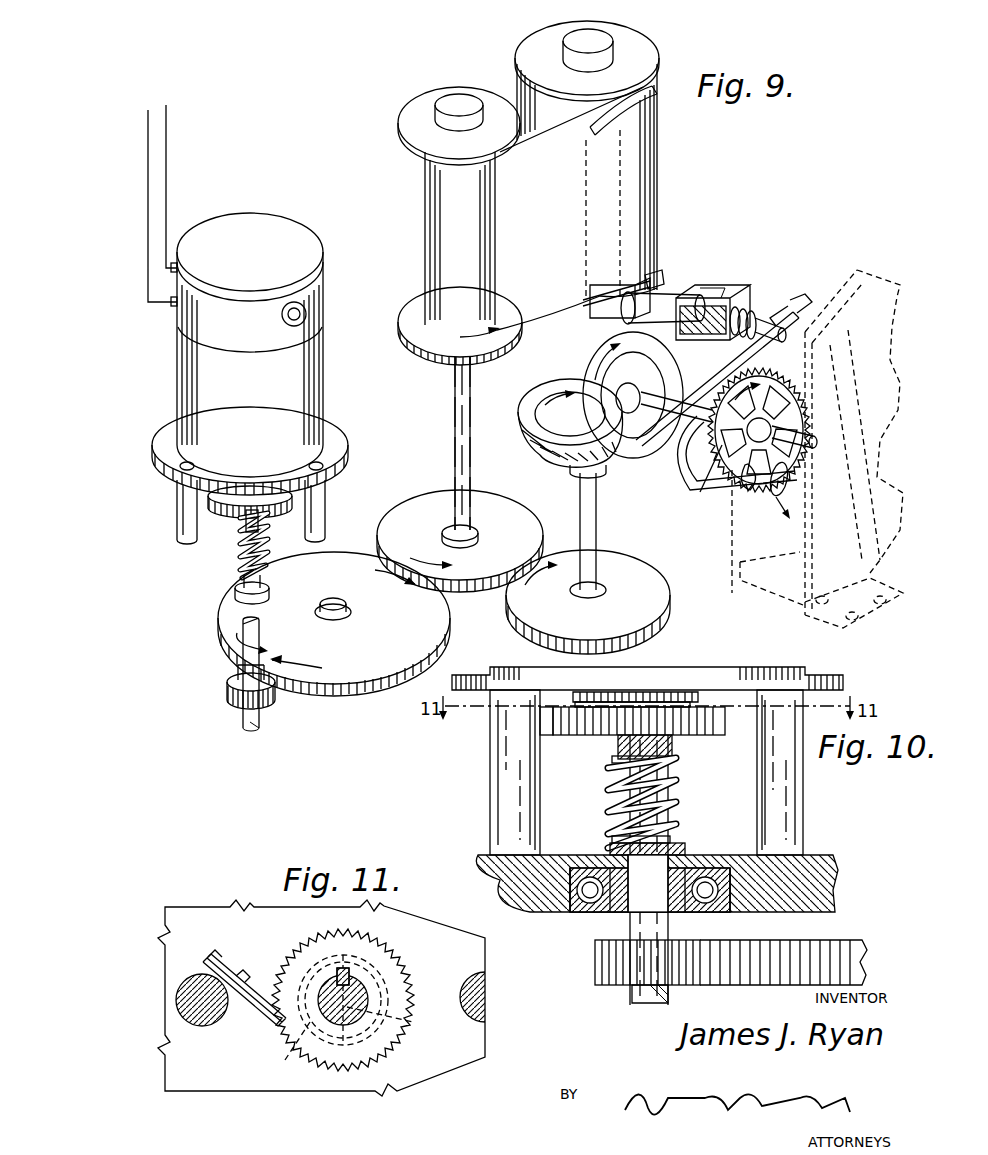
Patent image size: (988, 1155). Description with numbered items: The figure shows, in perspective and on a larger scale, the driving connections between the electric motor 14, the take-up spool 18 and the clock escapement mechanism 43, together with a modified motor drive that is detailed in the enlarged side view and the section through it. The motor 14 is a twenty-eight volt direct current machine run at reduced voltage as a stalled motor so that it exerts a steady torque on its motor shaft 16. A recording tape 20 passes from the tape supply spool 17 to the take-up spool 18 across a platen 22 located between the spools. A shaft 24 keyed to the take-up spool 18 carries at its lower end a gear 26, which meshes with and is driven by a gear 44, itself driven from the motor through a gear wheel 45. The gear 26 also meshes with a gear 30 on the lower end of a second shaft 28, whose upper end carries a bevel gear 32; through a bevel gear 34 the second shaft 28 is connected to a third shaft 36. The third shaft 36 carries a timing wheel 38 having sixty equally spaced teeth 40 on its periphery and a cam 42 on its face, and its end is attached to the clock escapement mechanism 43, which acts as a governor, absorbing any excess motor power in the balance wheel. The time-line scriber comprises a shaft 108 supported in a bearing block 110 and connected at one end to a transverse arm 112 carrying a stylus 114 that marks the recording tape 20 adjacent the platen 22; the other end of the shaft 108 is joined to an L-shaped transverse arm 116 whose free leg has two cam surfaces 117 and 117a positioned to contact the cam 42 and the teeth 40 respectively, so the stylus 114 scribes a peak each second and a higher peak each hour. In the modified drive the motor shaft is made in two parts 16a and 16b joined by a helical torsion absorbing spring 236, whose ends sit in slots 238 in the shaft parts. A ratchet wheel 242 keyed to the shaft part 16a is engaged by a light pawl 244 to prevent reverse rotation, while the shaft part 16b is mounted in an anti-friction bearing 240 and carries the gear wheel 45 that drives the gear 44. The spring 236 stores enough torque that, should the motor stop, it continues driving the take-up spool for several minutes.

In FIG. 9, the electric motor 14 is at (316, 370).
In FIG. 9, the motor shaft 16 is at (251, 728).
In FIG. 10, the motor shaft 16 is at (633, 1004).
In FIG. 9, the shaft part 16a is at (245, 537).
In FIG. 10, the shaft part 16a is at (674, 752).
In FIG. 9, the shaft part 16b is at (256, 603).
In FIG. 10, the shaft part 16b is at (612, 846).
In FIG. 9, the tape supply spool 17 is at (650, 58).
In FIG. 9, the take-up spool 18 is at (408, 122).
In FIG. 9, the recording tape 20 is at (553, 298).
In FIG. 9, the platen 22 is at (614, 116).
In FIG. 9, the shaft 24 is at (455, 420).
In FIG. 9, the gear 26 is at (480, 572).
In FIG. 9, the second shaft 28 is at (600, 512).
In FIG. 9, the gear 30 is at (668, 596).
In FIG. 9, the bevel gear 32 is at (536, 441).
In FIG. 9, the bevel gear 34 is at (586, 380).
In FIG. 9, the third shaft 36 is at (693, 397).
In FIG. 9, the timing wheel 38 is at (700, 492).
In FIG. 9, the teeth 40 is at (772, 382).
In FIG. 9, the cam 42 is at (745, 484).
In FIG. 9, the clock escapement mechanism 43 is at (860, 294).
In FIG. 9, the gear 44 is at (376, 690).
In FIG. 10, the gear 44 is at (863, 940).
In FIG. 9, the gear wheel 45 is at (266, 706).
In FIG. 10, the gear wheel 45 is at (603, 974).
In FIG. 9, the shaft 108 is at (790, 322).
In FIG. 9, the bearing block 110 is at (740, 298).
In FIG. 9, the transverse arm 112 is at (658, 286).
In FIG. 9, the stylus 114 is at (627, 284).
In FIG. 9, the L-shaped transverse arm 116 is at (683, 476).
In FIG. 9, the cam surface 117 is at (788, 483).
In FIG. 9, the cam surface 117a is at (782, 499).
In FIG. 9, the helical torsion absorbing spring 236 is at (240, 570).
In FIG. 10, the helical torsion absorbing spring 236 is at (686, 806).
In FIG. 11, the helical torsion absorbing spring 236 is at (410, 1022).
In FIG. 10, the slots 238 is at (640, 760).
In FIG. 11, the slots 238 is at (287, 1058).
In FIG. 10, the anti-friction bearing 240 is at (696, 912).
In FIG. 9, the ratchet wheel 242 is at (253, 511).
In FIG. 10, the ratchet wheel 242 is at (706, 727).
In FIG. 11, the ratchet wheel 242 is at (403, 1035).
In FIG. 10, the light pawl 244 is at (556, 740).
In FIG. 11, the light pawl 244 is at (266, 1014).